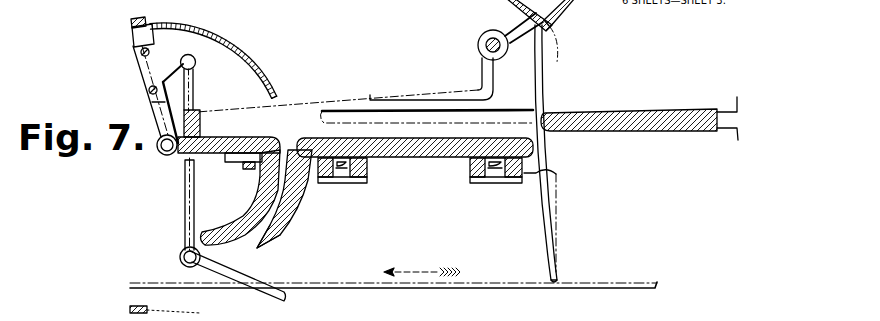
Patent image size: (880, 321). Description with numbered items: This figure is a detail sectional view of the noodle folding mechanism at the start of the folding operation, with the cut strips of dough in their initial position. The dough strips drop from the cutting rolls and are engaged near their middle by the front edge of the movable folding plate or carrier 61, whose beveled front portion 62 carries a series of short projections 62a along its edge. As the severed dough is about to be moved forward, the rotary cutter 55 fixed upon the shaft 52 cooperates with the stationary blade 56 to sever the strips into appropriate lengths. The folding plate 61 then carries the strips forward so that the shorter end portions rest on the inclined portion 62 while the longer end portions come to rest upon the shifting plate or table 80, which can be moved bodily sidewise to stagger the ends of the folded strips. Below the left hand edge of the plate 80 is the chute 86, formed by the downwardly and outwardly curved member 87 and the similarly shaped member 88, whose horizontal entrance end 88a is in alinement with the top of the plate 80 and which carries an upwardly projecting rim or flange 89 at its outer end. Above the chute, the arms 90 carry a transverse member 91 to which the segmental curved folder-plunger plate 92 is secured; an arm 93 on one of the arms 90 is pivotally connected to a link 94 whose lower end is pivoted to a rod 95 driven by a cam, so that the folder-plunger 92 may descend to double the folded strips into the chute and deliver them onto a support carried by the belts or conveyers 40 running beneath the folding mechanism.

The belt or conveyer 40 is at (150, 287).
The shaft 52 is at (480, 48).
The rotary cutter 55 is at (515, 10).
The stationary blade 56 is at (560, 21).
The movable folding plate 61 is at (688, 112).
The beveled front portion 62 is at (602, 115).
The short projections 62a is at (562, 113).
The plate or table 80 is at (452, 150).
The chute 86 is at (292, 150).
The downwardly and outwardly curved member 87 is at (277, 232).
The chute member 88 is at (240, 217).
The horizontal entrance end 88a is at (250, 130).
The upwardly projecting rim or flange 89 is at (203, 122).
The arm 90 is at (158, 123).
The transverse member 91 is at (133, 38).
The curved plate 92 is at (248, 55).
The arm 93 is at (173, 58).
The link 94 is at (186, 200).
The rod 95 is at (283, 294).